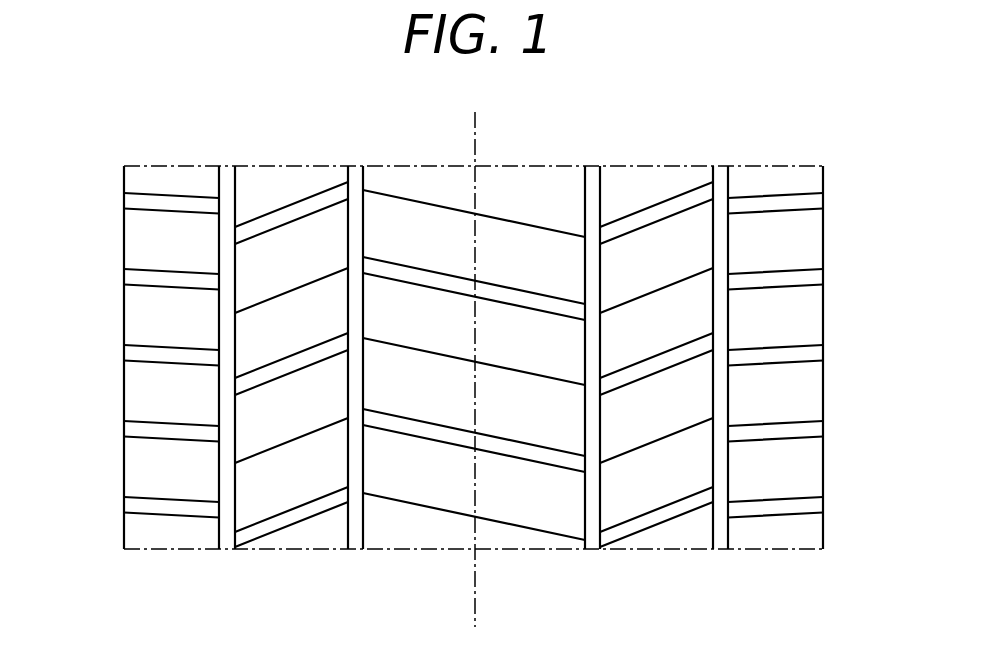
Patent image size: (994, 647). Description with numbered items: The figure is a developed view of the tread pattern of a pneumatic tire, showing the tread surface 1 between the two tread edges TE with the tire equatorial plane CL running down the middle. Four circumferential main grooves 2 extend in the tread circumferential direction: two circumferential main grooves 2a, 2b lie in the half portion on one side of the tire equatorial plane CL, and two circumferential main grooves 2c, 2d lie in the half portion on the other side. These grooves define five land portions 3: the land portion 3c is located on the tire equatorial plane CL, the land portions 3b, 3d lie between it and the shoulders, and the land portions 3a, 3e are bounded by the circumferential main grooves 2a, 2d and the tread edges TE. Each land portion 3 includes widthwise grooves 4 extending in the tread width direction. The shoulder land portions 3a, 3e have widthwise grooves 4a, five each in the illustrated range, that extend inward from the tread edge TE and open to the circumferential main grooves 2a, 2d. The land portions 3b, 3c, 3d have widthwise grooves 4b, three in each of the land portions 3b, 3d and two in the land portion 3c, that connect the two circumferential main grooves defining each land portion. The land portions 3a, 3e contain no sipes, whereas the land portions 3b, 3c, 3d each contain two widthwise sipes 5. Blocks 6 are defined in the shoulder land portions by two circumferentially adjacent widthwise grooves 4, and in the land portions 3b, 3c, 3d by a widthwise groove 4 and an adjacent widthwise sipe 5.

The tread surface 1 is at (875, 112).
The circumferential main groove 2 is at (486, 316).
The circumferential main groove 2a is at (223, 164).
The circumferential main groove 2b is at (355, 165).
The circumferential main groove 2c is at (592, 165).
The circumferential main groove 2d is at (722, 165).
The land portion 3 is at (481, 575).
The land portion 3a is at (173, 538).
The land portion 3b is at (305, 538).
The land portion 3c is at (455, 538).
The land portion 3d is at (657, 538).
The land portion 3e is at (773, 538).
The widthwise groove 4 is at (473, 332).
The widthwise groove 4a is at (130, 201).
The widthwise groove 4b is at (300, 203).
The widthwise sipe 5 is at (300, 283).
The block 6 is at (777, 477).
The tire equatorial plane CL is at (477, 357).
The tread edge TE is at (124, 316).